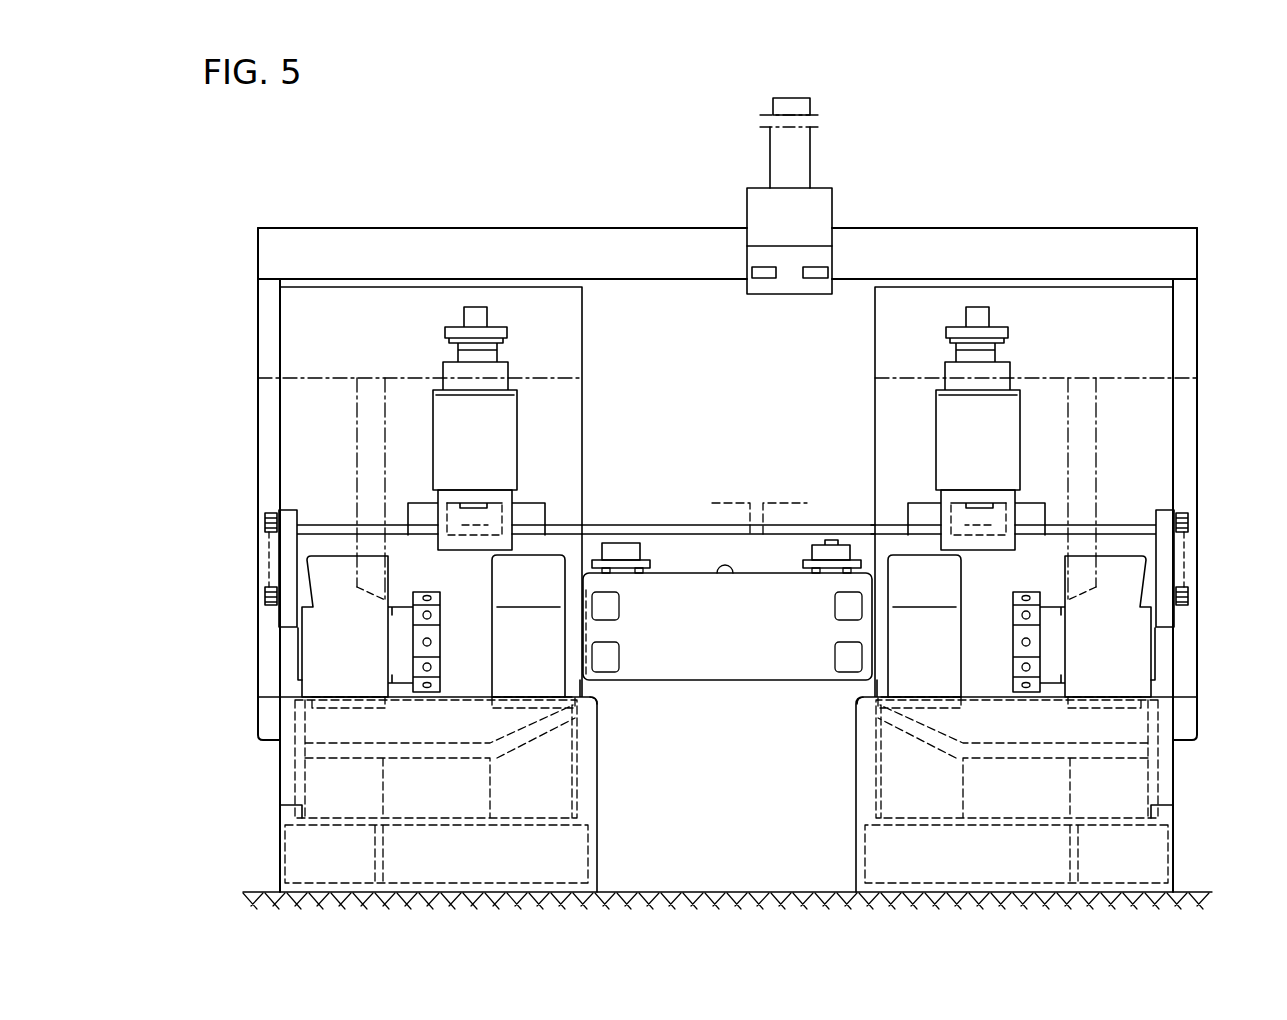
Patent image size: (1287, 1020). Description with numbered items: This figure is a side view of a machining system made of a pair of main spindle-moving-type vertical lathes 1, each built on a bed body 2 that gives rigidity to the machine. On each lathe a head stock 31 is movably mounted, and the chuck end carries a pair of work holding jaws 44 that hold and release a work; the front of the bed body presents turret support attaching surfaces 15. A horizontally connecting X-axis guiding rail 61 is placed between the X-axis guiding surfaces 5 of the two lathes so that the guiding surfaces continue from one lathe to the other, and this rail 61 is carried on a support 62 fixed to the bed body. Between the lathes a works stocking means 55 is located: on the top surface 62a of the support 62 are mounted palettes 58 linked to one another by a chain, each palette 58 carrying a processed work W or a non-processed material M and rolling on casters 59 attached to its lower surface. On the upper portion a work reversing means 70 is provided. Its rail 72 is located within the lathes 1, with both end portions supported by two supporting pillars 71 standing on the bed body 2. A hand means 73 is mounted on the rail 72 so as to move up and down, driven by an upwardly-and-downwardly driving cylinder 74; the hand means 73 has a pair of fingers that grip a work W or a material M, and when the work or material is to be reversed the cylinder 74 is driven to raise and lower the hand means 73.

The lathe 1 is at (588, 347).
The bed body 2 is at (276, 813).
The X-axis guiding surfaces 5 is at (324, 526).
The turret support attaching surface 15 is at (509, 651).
The head stock 31 is at (459, 456).
The work holding jaws 44 is at (455, 517).
The works stocking means 55 is at (710, 550).
The palettes 58 is at (648, 567).
The casters 59 is at (637, 572).
The horizontally connecting X-axis guiding rail 61 is at (677, 527).
The support 62 is at (757, 545).
The top surface of support 62a is at (722, 573).
The work reversing means 70 is at (842, 192).
The supporting pillars 71 is at (262, 377).
The rail 72 is at (1086, 236).
The hand means 73 is at (753, 297).
The upwardly-and-downwardly driving cylinder 74 is at (780, 150).
The material M is at (623, 548).
The work W is at (838, 550).